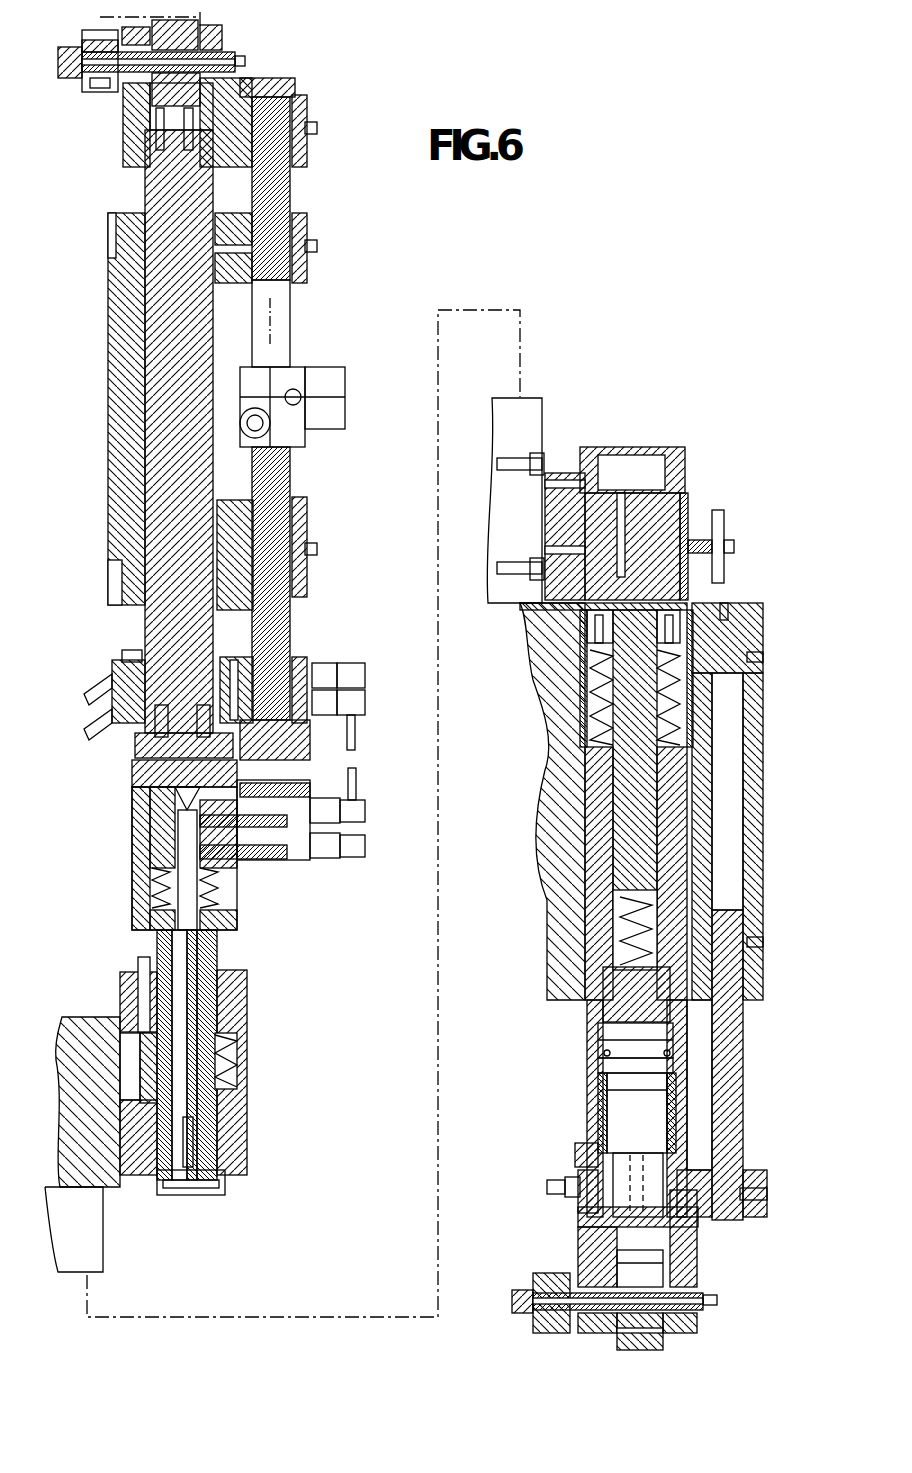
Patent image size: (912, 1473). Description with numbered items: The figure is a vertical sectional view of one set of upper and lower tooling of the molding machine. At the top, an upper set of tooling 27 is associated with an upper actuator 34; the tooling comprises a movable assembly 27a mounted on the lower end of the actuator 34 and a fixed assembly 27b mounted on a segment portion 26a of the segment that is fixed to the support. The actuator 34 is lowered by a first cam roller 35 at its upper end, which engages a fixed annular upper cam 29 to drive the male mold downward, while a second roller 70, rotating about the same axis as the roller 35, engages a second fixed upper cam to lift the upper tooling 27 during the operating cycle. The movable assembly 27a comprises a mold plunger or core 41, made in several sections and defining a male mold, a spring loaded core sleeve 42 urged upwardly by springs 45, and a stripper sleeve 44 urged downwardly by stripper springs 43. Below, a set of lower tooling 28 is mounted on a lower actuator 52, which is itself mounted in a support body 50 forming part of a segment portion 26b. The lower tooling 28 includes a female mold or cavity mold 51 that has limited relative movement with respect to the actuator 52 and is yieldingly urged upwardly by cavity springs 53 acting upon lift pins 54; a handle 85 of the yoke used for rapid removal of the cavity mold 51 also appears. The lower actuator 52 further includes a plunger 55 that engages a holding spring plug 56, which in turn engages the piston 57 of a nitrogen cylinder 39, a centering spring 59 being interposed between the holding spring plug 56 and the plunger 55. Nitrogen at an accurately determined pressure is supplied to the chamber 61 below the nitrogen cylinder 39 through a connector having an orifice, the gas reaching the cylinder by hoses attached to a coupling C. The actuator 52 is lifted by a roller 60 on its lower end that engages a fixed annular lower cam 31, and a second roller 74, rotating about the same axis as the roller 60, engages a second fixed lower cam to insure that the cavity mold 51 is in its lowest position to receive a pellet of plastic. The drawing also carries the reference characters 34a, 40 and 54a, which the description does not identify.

The fixed annular cam 29 is at (100, 17).
The cam roller 35 is at (190, 42).
The second roller 70 is at (100, 88).
The actuator 34 is at (148, 186).
The housing 34a is at (112, 497).
The upper set of tooling 27 is at (219, 849).
The movable assembly 27a is at (140, 895).
The springs 45 is at (217, 880).
The core sleeve 42 is at (203, 957).
The segment portion 26a is at (80, 1028).
The stripper springs 43 is at (240, 1047).
The fixed assembly 27b is at (230, 1095).
The block 40 is at (248, 1147).
The stripper sleeve 44 is at (225, 1190).
The mold plunger or core 41 is at (207, 1195).
The set of lower tooling 28 is at (658, 479).
The female mold assembly 51 is at (685, 465).
The handle 85 is at (724, 525).
The lift pins 54 is at (588, 622).
The sleeve flange 54a is at (593, 638).
The cavity springs 53 is at (583, 707).
The lower actuator 52 is at (597, 787).
The plunger 55 is at (623, 832).
The segment portion 26b is at (765, 793).
The centering spring 59 is at (613, 933).
The holding spring plug 56 is at (613, 987).
The piston 57 is at (623, 1032).
The nitrogen cylinder 39 is at (625, 1110).
The coupling C is at (558, 1178).
The chamber 61 is at (618, 1210).
The second roller 74 is at (552, 1273).
The roller 60 is at (647, 1270).
The fixed annular cam 31 is at (663, 1343).
The support body 50 is at (755, 998).